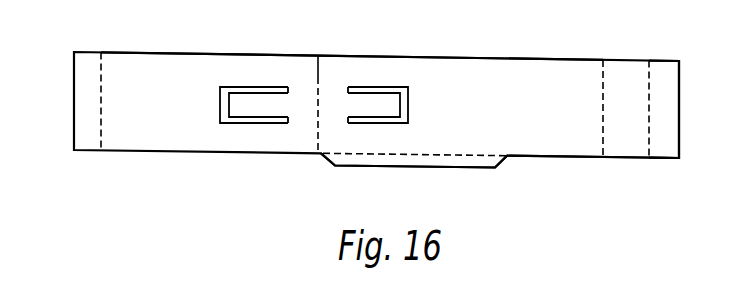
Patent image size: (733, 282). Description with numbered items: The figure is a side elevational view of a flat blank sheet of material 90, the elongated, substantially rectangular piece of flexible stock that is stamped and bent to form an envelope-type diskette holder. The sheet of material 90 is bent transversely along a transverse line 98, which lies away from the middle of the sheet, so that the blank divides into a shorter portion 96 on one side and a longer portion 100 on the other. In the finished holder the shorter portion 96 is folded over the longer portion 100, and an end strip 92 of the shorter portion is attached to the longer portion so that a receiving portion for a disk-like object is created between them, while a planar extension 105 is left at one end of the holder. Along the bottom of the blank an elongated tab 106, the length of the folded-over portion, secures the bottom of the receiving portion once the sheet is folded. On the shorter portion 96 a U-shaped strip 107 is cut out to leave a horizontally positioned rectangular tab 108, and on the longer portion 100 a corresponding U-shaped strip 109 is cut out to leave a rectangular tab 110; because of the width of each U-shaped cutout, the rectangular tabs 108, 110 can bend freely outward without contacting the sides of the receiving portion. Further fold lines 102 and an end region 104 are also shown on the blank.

The sheet of material 90 is at (73, 62).
The end strip 92 is at (88, 62).
The shorter portion 96 is at (166, 65).
The transverse line 98 is at (318, 72).
The longer portion 100 is at (433, 67).
The fold line 102 is at (602, 72).
The end panel 104 is at (663, 70).
The planar extension 105 is at (553, 140).
The elongated tab 106 is at (477, 160).
The U-shaped strip 107 is at (225, 124).
The rectangular tab 108 is at (255, 107).
The U-shaped strip 109 is at (402, 124).
The rectangular tab 110 is at (373, 108).